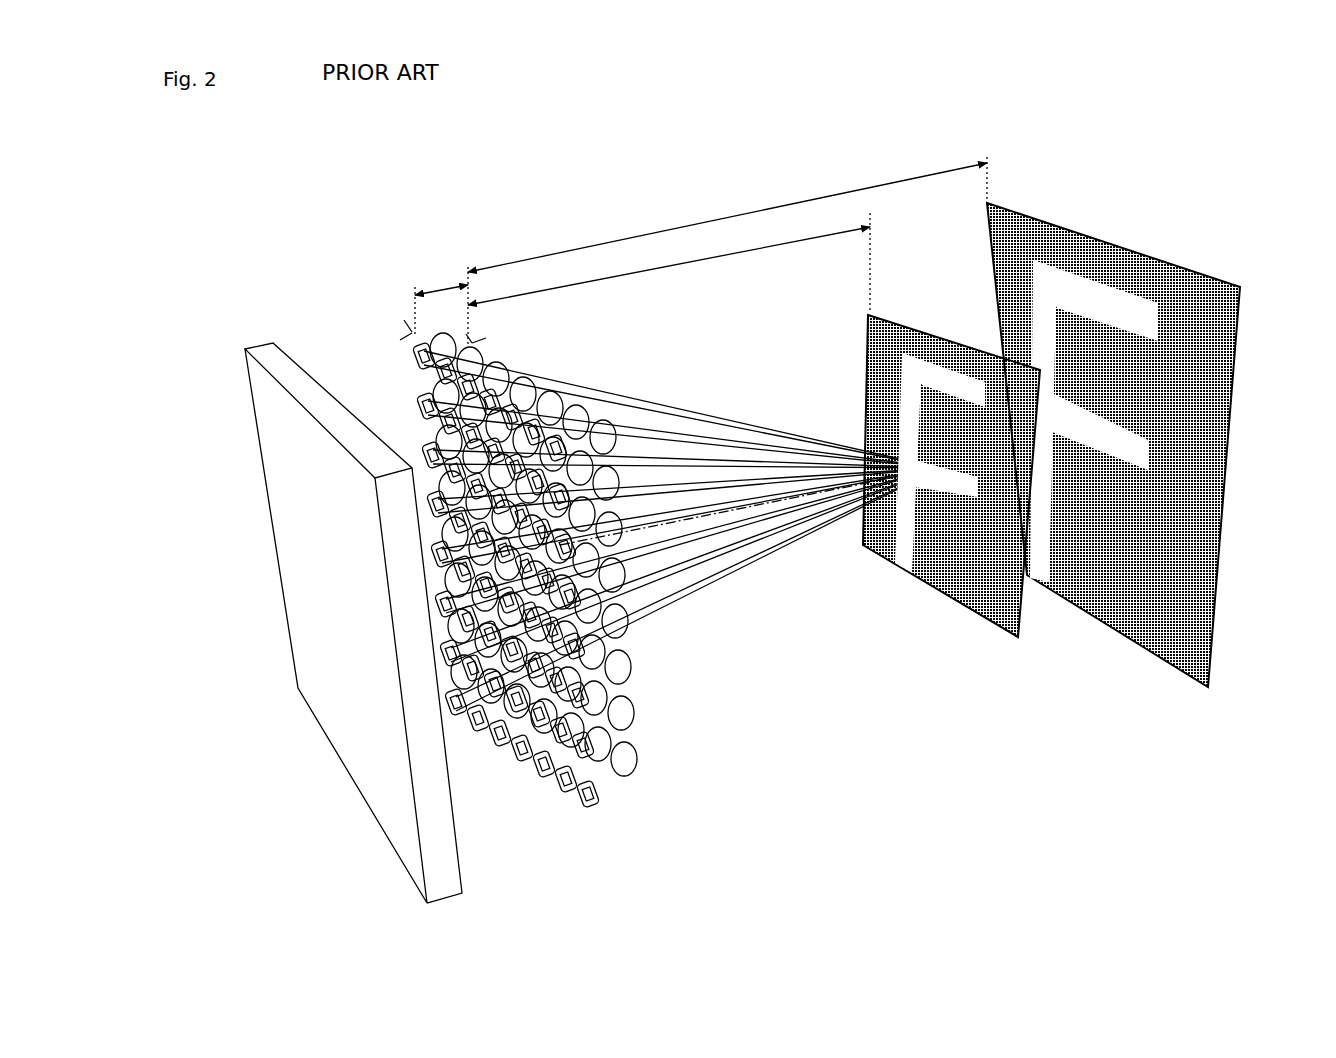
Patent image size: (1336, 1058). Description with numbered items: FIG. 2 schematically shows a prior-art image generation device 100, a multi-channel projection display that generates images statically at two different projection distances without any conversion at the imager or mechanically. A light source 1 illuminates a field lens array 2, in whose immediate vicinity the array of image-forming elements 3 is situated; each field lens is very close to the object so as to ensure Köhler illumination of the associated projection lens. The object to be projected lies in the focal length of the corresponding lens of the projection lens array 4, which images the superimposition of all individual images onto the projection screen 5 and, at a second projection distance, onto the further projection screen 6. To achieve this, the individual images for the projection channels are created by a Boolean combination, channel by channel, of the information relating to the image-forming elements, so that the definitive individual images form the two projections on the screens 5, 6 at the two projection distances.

The image generation device 100 is at (626, 203).
The light source 1 is at (273, 345).
The field lens array 2 is at (407, 360).
The array of image-forming elements 3 is at (594, 808).
The projection lens array 4 is at (634, 775).
The projection screen 5 is at (977, 612).
The further projection screen 6 is at (1162, 648).